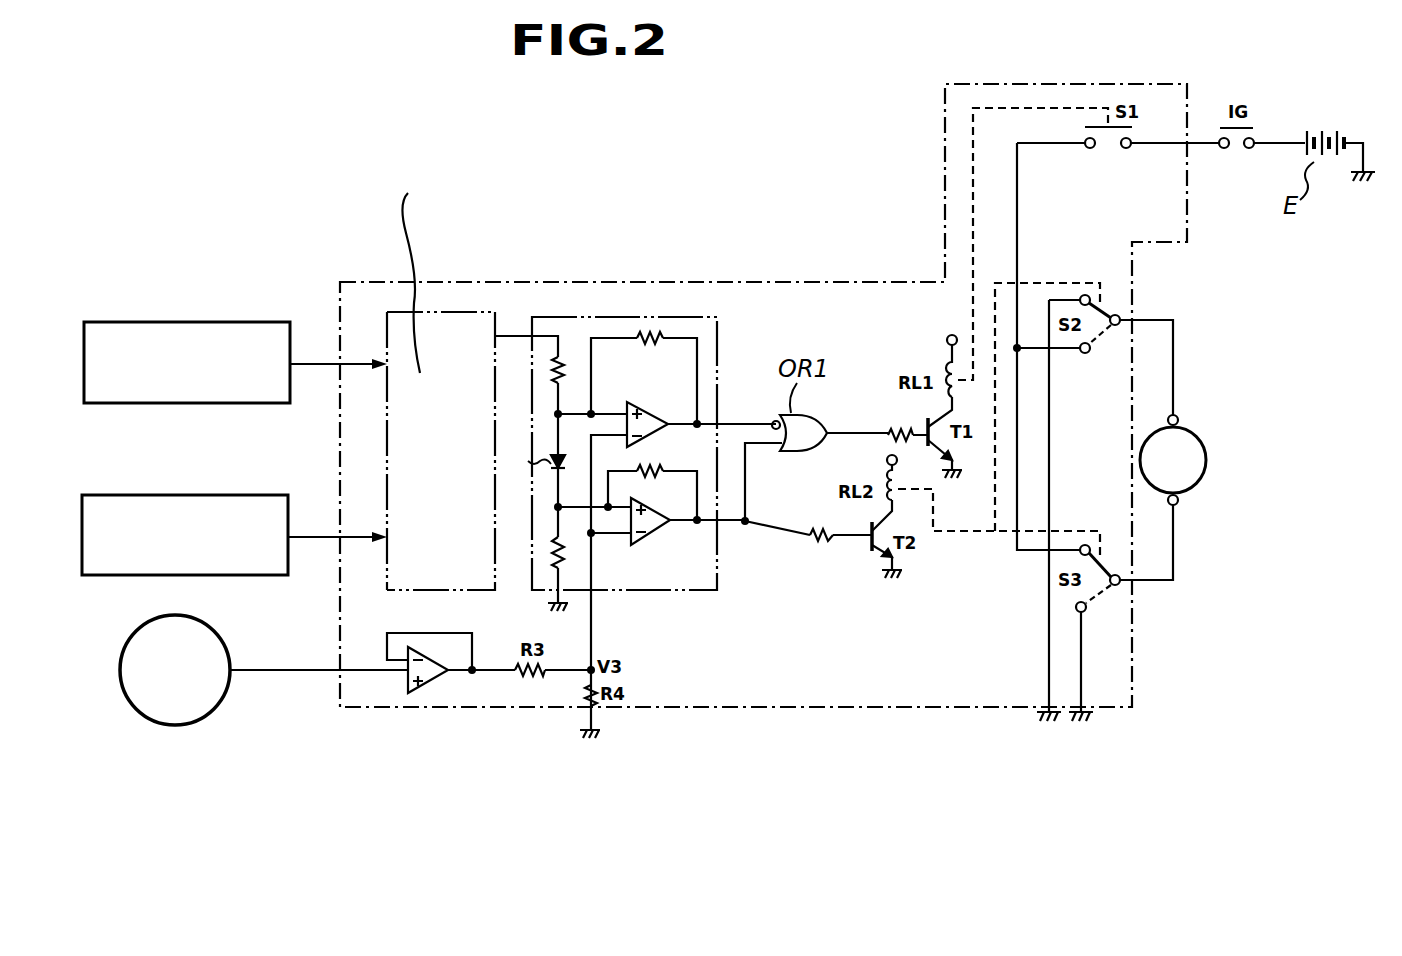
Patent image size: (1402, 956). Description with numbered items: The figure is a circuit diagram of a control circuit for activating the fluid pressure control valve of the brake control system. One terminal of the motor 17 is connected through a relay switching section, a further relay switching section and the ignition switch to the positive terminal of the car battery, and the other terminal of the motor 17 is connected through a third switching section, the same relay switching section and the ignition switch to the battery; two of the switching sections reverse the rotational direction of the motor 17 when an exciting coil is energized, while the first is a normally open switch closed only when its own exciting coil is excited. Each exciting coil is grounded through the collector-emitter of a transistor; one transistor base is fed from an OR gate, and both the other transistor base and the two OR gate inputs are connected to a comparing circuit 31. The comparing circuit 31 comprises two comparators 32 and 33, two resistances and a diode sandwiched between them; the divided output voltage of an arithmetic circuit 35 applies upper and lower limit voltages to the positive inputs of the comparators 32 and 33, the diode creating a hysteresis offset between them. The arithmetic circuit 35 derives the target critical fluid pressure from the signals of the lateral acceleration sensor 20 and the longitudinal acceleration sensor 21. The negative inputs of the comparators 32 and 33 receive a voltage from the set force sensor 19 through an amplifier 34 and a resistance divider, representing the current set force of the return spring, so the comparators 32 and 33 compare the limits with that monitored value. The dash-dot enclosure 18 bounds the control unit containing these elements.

The motor 17 is at (1204, 440).
The control unit 18 is at (1053, 84).
The set force sensor 19 is at (222, 640).
The lateral acceleration sensor 20 is at (277, 322).
The longitudinal acceleration sensor 21 is at (262, 495).
The comparing circuit 31 is at (613, 317).
The comparator 32 is at (646, 402).
The comparator 33 is at (652, 540).
The amplifier 34 is at (432, 684).
The arithmetic circuit 35 is at (470, 312).